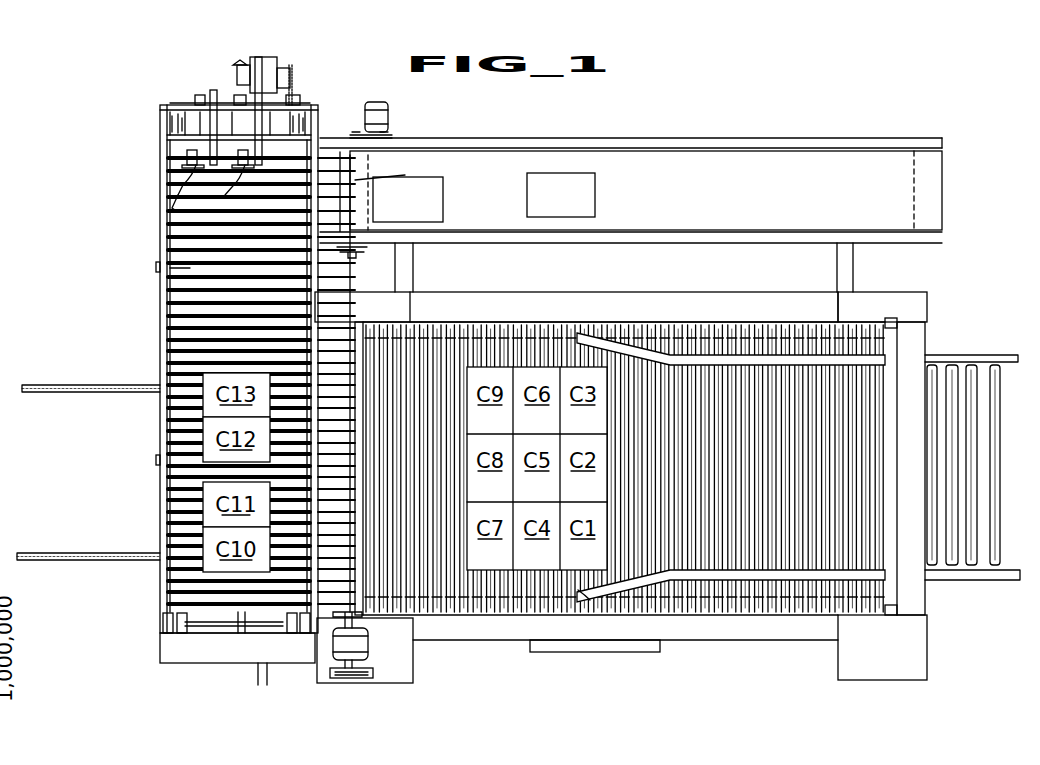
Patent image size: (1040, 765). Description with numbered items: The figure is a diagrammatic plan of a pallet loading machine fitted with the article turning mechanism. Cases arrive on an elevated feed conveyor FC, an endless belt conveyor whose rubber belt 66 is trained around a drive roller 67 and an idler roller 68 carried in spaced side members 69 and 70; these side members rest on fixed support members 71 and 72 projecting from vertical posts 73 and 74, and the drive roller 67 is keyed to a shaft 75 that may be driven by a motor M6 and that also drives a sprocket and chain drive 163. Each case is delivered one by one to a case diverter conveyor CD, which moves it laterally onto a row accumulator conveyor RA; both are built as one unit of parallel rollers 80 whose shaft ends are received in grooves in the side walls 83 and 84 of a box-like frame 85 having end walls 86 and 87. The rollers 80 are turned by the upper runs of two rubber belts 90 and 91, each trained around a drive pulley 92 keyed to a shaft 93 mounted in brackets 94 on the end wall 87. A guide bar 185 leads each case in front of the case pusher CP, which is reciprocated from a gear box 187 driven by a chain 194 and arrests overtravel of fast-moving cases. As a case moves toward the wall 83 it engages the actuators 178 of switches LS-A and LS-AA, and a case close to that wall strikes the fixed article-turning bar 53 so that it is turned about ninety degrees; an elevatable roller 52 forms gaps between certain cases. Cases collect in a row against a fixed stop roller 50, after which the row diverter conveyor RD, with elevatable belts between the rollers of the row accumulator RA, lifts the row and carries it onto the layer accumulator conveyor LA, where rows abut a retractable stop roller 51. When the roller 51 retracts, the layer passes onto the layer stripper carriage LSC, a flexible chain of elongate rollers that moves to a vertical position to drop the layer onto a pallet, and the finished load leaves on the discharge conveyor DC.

The row accumulator conveyor RA is at (165, 302).
The row diverter conveyor RD is at (168, 485).
The rollers 80 is at (300, 255).
The end wall 86 is at (165, 104).
The box-like frame 85 is at (160, 120).
The case pusher CP is at (213, 95).
The gear box 187 is at (270, 60).
The chain 194 is at (292, 68).
The switch LS-A is at (240, 153).
The switch LS-AA is at (190, 152).
The rubber belt 90 is at (205, 165).
The side wall 83 is at (160, 178).
The actuators 178 is at (190, 200).
The case diverter conveyor CD is at (170, 220).
The article-turning bar 53 is at (170, 265).
The elevatable roller 52 is at (170, 455).
The stop roller 50 is at (185, 578).
The end wall 87 is at (175, 652).
The shaft 93 is at (228, 622).
The drive pulley 92 is at (165, 620).
The brackets 94 is at (187, 630).
The feed conveyor FC is at (668, 158).
The side member 69 is at (590, 142).
The belt 66 is at (740, 197).
The drive roller 67 is at (368, 162).
The guide bar 185 is at (355, 180).
The idler roller 68 is at (914, 163).
The shaft 75 is at (357, 140).
The motor M6 is at (388, 112).
The rubber belt 91 is at (318, 148).
The sprocket and chain drive 163 is at (365, 248).
The support member 71 is at (404, 282).
The side member 70 is at (622, 238).
The support member 72 is at (838, 268).
The vertical post 73 is at (420, 305).
The side wall 84 is at (320, 300).
The vertical post 74 is at (880, 300).
The layer accumulator conveyor LA is at (510, 612).
The layer stripper carriage LSC is at (780, 543).
The retractable stop roller 51 is at (625, 580).
The discharge conveyor DC is at (985, 355).